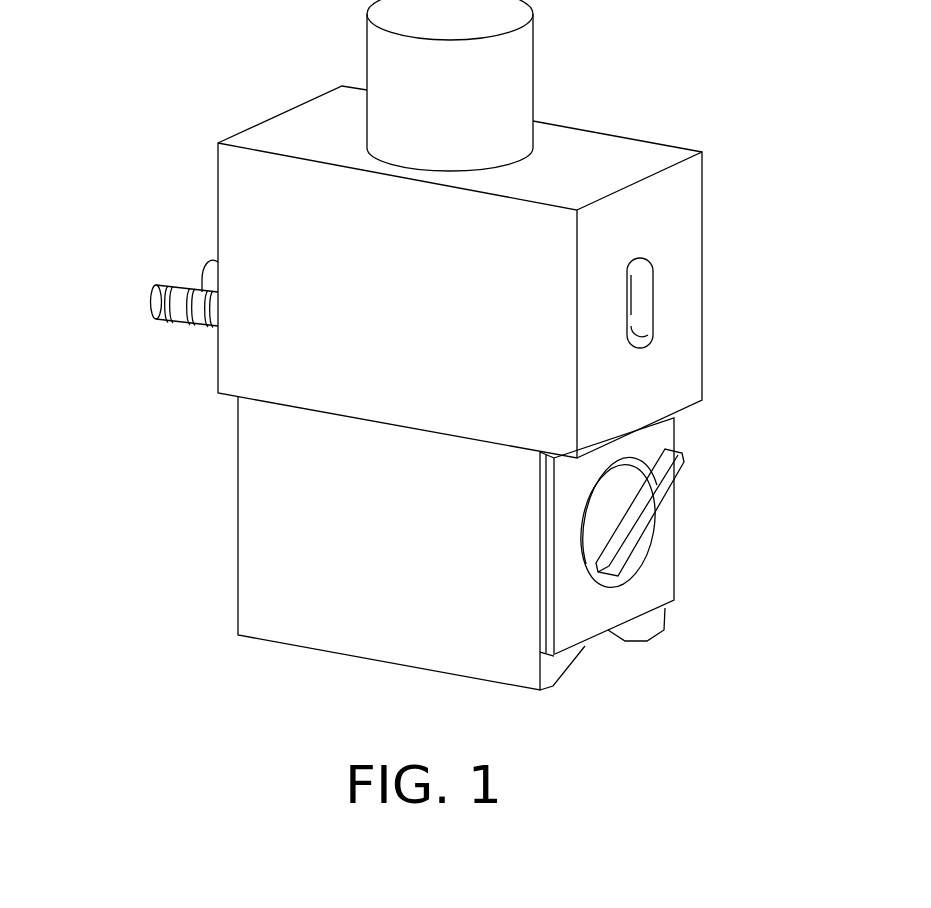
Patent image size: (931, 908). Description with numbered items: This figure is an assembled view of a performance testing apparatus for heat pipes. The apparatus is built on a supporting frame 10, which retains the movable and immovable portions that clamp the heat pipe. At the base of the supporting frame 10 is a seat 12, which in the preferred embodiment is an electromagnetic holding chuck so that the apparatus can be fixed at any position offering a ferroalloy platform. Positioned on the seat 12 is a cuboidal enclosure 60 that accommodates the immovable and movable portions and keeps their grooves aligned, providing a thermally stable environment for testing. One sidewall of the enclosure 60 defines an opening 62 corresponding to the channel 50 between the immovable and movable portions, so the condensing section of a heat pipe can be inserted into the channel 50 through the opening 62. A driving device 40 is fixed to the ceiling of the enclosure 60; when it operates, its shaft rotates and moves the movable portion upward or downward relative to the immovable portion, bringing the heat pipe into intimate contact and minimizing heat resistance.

The supporting frame 10 is at (100, 193).
The seat 12 is at (263, 577).
The driving device 40 is at (413, 88).
The channel 50 is at (628, 327).
The cuboidal enclosure 60 is at (252, 237).
The opening 62 is at (638, 288).